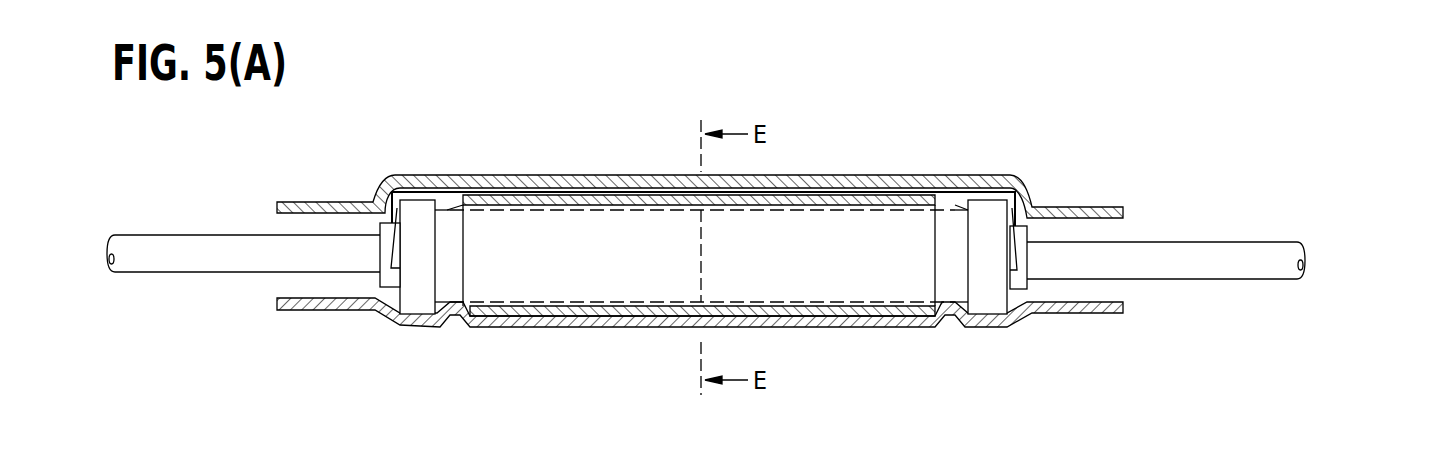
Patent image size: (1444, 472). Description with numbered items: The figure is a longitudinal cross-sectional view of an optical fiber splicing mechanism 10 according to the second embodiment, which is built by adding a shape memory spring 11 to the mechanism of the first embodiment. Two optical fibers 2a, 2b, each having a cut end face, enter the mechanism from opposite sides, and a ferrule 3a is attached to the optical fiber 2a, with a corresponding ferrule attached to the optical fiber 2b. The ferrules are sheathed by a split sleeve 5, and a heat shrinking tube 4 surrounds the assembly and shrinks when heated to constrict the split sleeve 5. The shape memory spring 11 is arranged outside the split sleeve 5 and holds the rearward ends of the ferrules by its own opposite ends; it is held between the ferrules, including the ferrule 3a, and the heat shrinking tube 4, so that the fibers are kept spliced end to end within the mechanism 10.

The optical fiber 2a is at (180, 233).
The optical fiber 2b is at (1228, 282).
The ferrule 3a is at (452, 285).
The heat shrinking tube 4 is at (350, 203).
The split sleeve 5 is at (567, 287).
The optical fiber splicing mechanism 10 is at (847, 229).
The shape memory spring 11 is at (882, 136).